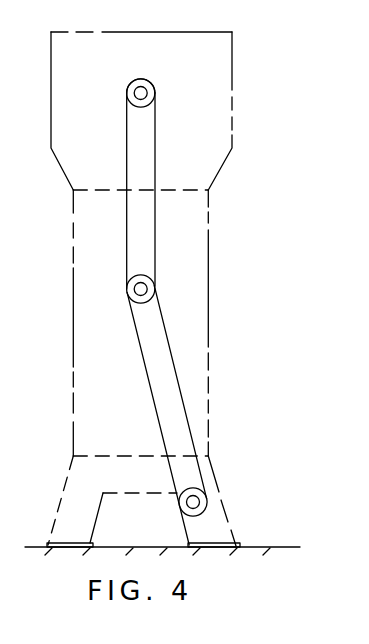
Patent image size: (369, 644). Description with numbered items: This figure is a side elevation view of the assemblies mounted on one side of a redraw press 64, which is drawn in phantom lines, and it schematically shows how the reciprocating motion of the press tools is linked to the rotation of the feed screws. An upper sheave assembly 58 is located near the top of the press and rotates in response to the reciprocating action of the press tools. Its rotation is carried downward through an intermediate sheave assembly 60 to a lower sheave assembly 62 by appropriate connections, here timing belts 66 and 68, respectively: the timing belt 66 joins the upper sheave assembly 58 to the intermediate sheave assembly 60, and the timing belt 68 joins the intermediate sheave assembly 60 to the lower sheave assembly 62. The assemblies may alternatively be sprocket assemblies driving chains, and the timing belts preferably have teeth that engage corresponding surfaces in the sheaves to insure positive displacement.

The upper sheave assembly 58 is at (148, 91).
The intermediate sheave assembly 60 is at (138, 290).
The lower sheave assembly 62 is at (197, 500).
The redraw press 64 is at (208, 277).
The timing belt 66 is at (127, 157).
The timing belt 68 is at (145, 369).